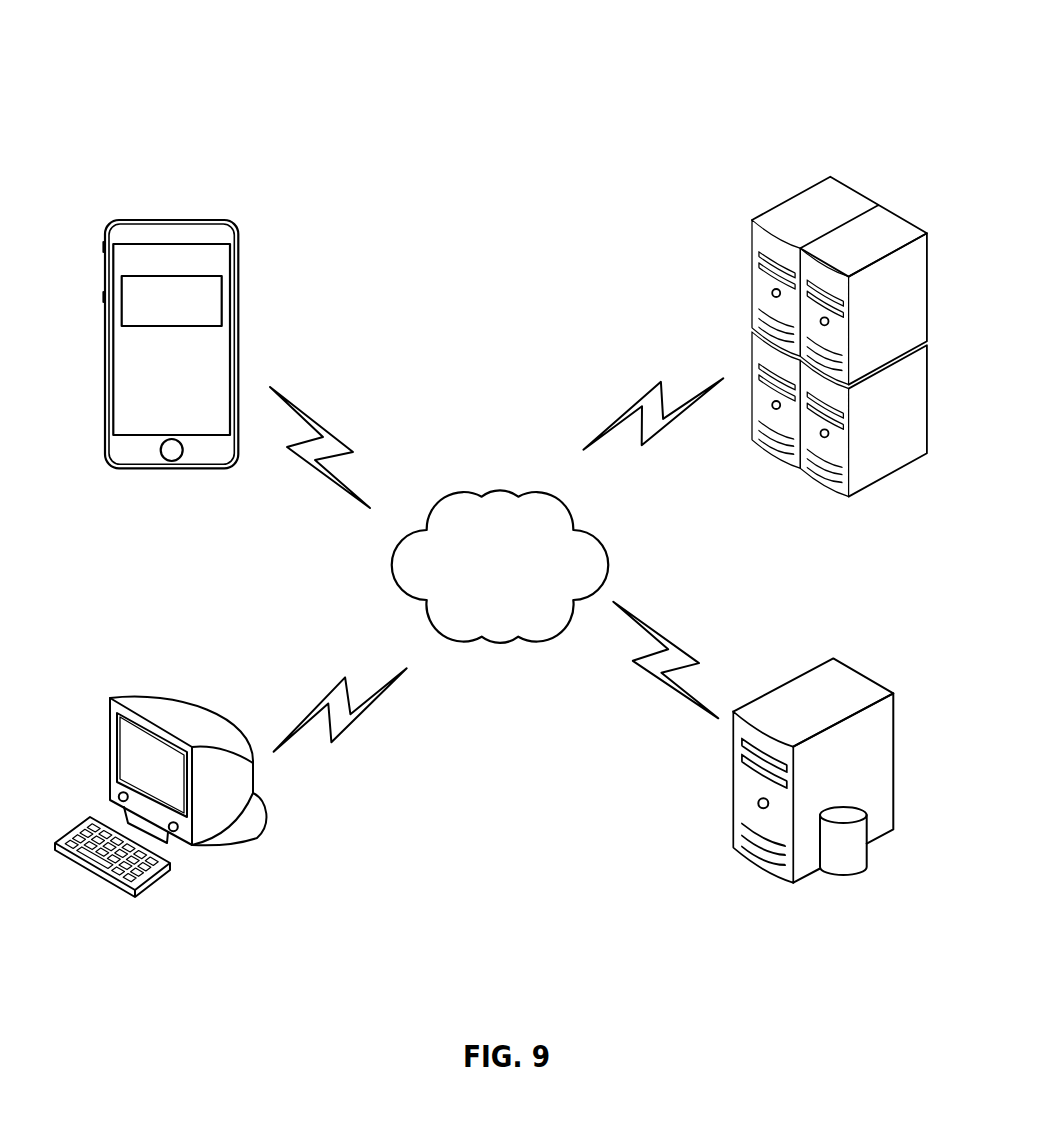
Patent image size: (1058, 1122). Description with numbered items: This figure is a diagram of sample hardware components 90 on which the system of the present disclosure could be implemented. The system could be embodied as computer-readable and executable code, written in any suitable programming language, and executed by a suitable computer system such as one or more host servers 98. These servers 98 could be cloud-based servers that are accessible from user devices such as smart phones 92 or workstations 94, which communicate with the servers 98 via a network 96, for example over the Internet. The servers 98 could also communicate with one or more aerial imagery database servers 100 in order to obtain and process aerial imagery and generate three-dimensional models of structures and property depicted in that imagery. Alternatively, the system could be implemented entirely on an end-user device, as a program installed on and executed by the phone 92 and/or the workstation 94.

The hardware components 90 is at (122, 52).
The smart phone 92 is at (158, 219).
The workstation 94 is at (132, 695).
The network 96 is at (500, 493).
The host server 98 is at (793, 195).
The aerial imagery database server 100 is at (787, 682).